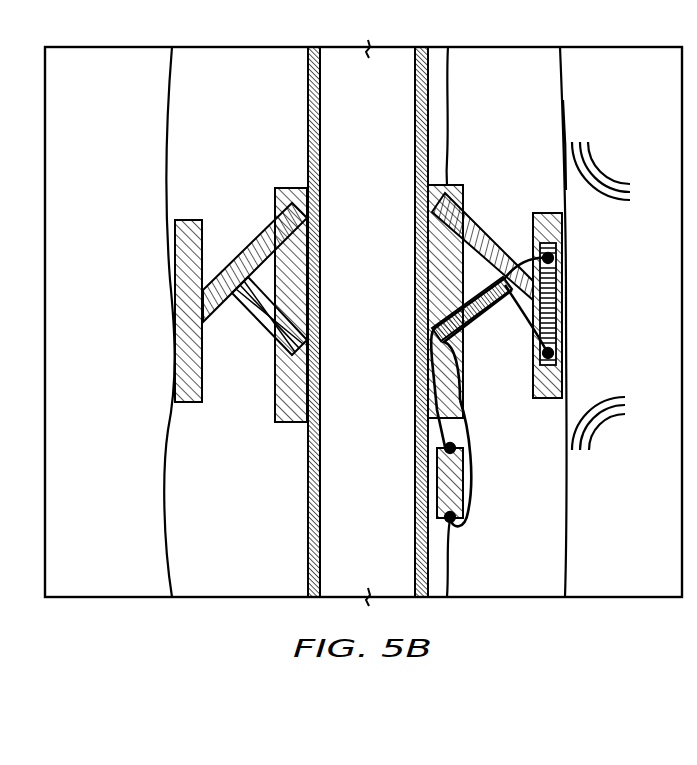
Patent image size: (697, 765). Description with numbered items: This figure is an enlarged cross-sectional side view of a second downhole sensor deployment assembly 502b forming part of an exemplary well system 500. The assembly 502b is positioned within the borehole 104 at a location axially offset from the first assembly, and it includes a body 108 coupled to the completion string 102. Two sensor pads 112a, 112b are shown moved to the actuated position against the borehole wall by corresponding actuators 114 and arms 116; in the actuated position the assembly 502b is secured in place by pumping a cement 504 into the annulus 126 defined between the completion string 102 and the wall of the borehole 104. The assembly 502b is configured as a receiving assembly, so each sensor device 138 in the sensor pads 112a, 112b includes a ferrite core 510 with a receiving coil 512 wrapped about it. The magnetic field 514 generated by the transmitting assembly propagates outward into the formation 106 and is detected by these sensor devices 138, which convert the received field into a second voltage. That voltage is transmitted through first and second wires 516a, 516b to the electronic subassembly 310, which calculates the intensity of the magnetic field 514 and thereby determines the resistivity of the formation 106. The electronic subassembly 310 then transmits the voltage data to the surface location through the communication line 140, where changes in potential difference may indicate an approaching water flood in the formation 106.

The well system 500 is at (39, 60).
The completion string 102 is at (320, 96).
The borehole 104 is at (561, 83).
The formation 106 is at (648, 529).
The body 108 is at (368, 322).
The annulus 126 is at (258, 134).
The communication line 140 is at (450, 94).
The sensor pad 112a is at (170, 228).
The sensor pad 112b is at (566, 227).
The actuator 114 is at (250, 326).
The arm 116 is at (226, 260).
The sensor device 138 is at (562, 250).
The electronic subassembly 310 is at (436, 468).
The second downhole sensor deployment assembly 502b is at (224, 478).
The cement 504 is at (566, 130).
The ferrite core 510 is at (563, 362).
The receiving coil 512 is at (563, 295).
The magnetic field 514 is at (612, 172).
The first wire 516a is at (430, 372).
The second wire 516b is at (480, 466).